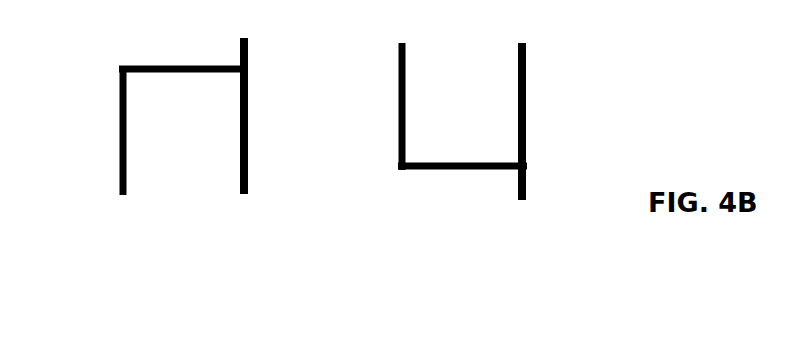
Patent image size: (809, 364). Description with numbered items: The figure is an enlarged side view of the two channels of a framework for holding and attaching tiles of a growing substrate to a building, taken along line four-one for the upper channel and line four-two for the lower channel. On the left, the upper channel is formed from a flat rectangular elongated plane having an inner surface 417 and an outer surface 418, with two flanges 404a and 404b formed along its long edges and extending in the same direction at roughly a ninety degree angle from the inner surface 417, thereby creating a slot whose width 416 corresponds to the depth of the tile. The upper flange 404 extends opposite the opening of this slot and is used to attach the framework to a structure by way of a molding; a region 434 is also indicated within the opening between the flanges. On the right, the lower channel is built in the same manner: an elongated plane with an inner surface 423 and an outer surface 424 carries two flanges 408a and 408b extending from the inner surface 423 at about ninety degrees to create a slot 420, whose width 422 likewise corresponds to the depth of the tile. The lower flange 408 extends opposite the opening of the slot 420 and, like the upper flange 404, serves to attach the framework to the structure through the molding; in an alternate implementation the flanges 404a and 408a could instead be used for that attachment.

The upper flange 404 is at (183, 154).
The flange 404a is at (245, 194).
The flange 404b is at (119, 137).
The width 416 is at (237, 105).
The inner surface 417 is at (181, 73).
The outer surface 418 is at (125, 65).
The gap region 434 is at (175, 164).
The lower flange 408 is at (497, 148).
The flange 408a is at (527, 64).
The flange 408b is at (398, 64).
The slot 420 is at (458, 66).
The width 422 is at (515, 95).
The inner surface 423 is at (480, 160).
The outer surface 424 is at (410, 173).